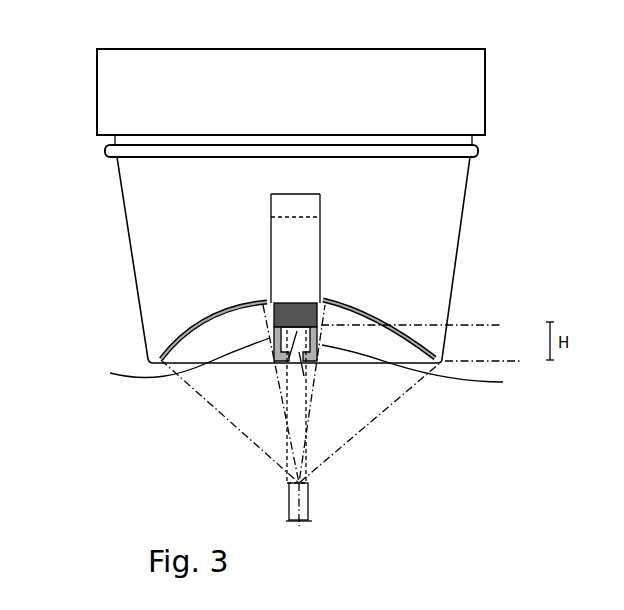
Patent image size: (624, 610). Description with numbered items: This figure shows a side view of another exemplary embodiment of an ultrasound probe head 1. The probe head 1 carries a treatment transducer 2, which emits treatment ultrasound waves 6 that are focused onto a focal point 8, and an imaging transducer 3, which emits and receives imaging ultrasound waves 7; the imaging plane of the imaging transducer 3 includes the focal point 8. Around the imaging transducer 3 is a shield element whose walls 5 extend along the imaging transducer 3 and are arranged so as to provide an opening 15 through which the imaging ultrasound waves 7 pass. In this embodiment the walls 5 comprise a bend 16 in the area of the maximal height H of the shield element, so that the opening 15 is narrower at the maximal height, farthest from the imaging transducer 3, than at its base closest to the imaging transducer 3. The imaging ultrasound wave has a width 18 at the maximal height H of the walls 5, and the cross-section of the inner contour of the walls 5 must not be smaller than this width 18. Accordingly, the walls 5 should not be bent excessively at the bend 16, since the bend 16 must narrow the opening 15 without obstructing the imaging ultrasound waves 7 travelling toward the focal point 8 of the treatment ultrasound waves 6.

The probe head 1 is at (66, 38).
The treatment transducer 2 is at (415, 340).
The imaging transducer 3 is at (283, 376).
The walls 5 is at (305, 367).
The treatment ultrasound waves 6 is at (353, 432).
The imaging ultrasound waves 7 is at (293, 408).
The focal point 8 is at (300, 484).
The opening 15 is at (303, 371).
The bend 16 is at (287, 362).
The width 18 is at (300, 524).